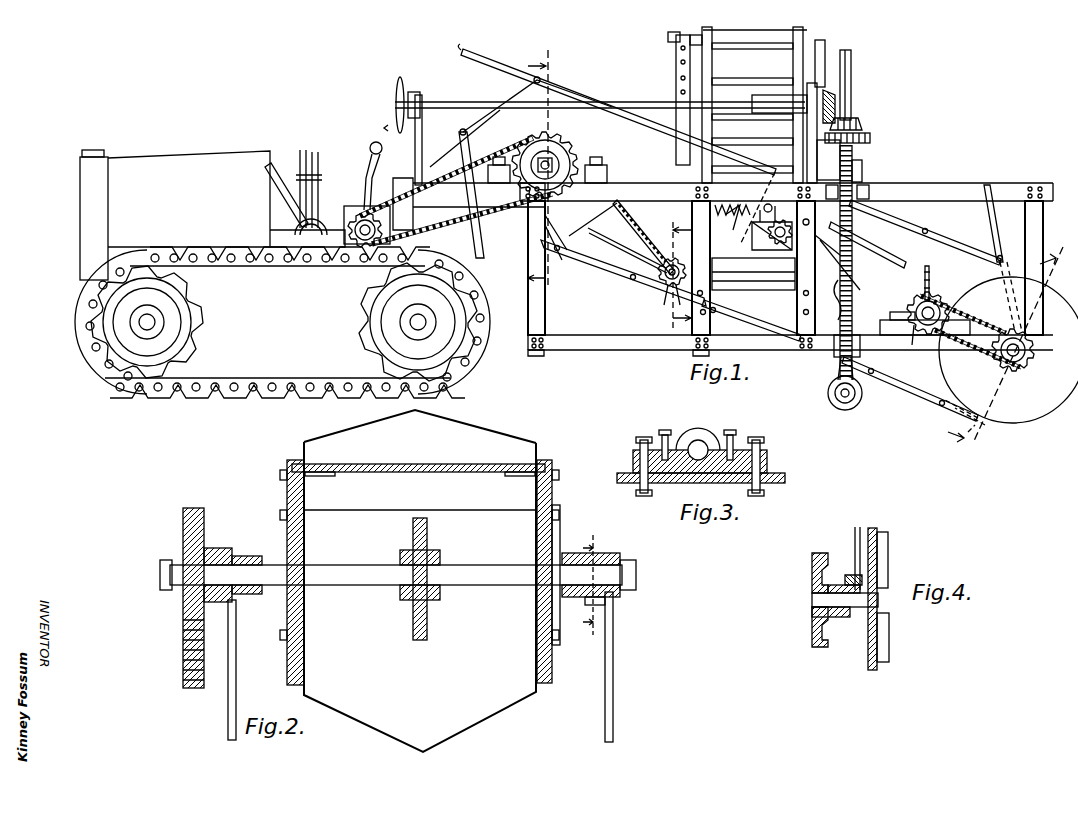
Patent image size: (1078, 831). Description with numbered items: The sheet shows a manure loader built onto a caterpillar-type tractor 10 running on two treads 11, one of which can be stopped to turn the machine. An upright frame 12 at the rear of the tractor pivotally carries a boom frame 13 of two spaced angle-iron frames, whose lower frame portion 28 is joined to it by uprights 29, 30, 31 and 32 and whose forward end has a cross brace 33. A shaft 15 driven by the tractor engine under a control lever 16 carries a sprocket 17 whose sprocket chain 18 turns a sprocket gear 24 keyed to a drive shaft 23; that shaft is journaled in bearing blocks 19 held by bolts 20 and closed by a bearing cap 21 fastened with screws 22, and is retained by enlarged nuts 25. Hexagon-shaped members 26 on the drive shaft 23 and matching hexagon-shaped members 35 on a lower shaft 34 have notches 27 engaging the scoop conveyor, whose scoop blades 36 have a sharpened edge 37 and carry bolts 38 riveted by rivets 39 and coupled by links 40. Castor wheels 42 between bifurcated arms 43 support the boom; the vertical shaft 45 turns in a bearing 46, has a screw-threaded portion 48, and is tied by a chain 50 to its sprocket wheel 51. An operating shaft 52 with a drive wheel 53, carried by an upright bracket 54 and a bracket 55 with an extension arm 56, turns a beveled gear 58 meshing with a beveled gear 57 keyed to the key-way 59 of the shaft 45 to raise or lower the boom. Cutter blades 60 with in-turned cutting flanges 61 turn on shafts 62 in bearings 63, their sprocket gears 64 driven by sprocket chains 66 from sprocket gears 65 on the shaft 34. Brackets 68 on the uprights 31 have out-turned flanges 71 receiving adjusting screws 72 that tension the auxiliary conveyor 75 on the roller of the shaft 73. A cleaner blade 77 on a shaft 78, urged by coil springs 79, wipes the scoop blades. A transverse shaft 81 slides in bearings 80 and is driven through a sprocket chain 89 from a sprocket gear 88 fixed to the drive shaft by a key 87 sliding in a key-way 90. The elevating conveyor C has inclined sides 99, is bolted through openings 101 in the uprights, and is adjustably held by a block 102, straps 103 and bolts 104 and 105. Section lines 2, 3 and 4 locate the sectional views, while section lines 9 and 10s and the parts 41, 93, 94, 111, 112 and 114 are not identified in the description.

In FIG. 1, the tractor 10 is at (212, 215).
In FIG. 1, the caterpillar tread 11 is at (258, 268).
In FIG. 1, the upright frame 12 is at (414, 214).
In FIG. 1, the boom frame 13 is at (786, 192).
In FIG. 2, the boom frame 13 is at (614, 598).
In FIG. 1, the shaft 15 is at (343, 235).
In FIG. 1, the control lever 16 is at (368, 152).
In FIG. 1, the sprocket 17 is at (366, 252).
In FIG. 1, the sprocket chain 18 is at (492, 160).
In FIG. 2, the sprocket chain 18 is at (193, 683).
In FIG. 1, the bearing block 19 is at (490, 180).
In FIG. 2, the bearing block 19 is at (242, 580).
In FIG. 3, the bearing block 19 is at (620, 468).
In FIG. 1, the bolt 20 is at (602, 165).
In FIG. 2, the bolt 20 is at (585, 606).
In FIG. 3, the bolt 20 is at (766, 442).
In FIG. 2, the bearing cap 21 is at (608, 556).
In FIG. 3, the bearing cap 21 is at (712, 428).
In FIG. 3, the screw 22 is at (735, 433).
In FIG. 1, the drive shaft 23 is at (553, 163).
In FIG. 2, the drive shaft 23 is at (396, 575).
In FIG. 1, the sprocket gear 24 is at (548, 150).
In FIG. 2, the sprocket gear 24 is at (198, 555).
In FIG. 2, the enlarged nut 25 is at (630, 560).
In FIG. 1, the hexagon-shaped member 26 is at (576, 262).
In FIG. 2, the hexagon-shaped member 26 is at (306, 620).
In FIG. 1, the notch 27 is at (855, 285).
In FIG. 1, the lower frame portion 28 is at (790, 345).
In FIG. 4, the lower frame portion 28 is at (845, 572).
In FIG. 1, the upright 29 is at (545, 317).
In FIG. 2, the upright 29 is at (236, 665).
In FIG. 1, the upright 30 is at (690, 335).
In FIG. 1, the upright 31 is at (803, 354).
In FIG. 1, the upright 32 is at (1043, 224).
In FIG. 4, the upright 32 is at (853, 534).
In FIG. 1, the cross brace 33 is at (1032, 182).
In FIG. 1, the shaft 34 is at (906, 333).
In FIG. 1, the hexagon-shaped member 35 is at (925, 300).
In FIG. 1, the scoop blade 36 is at (508, 65).
In FIG. 2, the scoop blade 36 is at (420, 581).
In FIG. 1, the pointed sharpened edge 37 is at (533, 98).
In FIG. 2, the pointed sharpened edge 37 is at (418, 420).
In FIG. 1, the bolt 38 is at (541, 80).
In FIG. 2, the bolt 38 is at (504, 478).
In FIG. 2, the rivet 39 is at (320, 477).
In FIG. 1, the link 40 is at (942, 233).
In FIG. 2, the link 40 is at (568, 532).
In FIG. 1, the screw bracket 41 is at (870, 186).
In FIG. 1, the castor wheel 42 is at (860, 403).
In FIG. 1, the bifurcated arm 43 is at (860, 388).
In FIG. 1, the vertical shaft 45 is at (838, 368).
In FIG. 1, the bearing 46 is at (850, 292).
In FIG. 1, the screw-threaded portion 48 is at (853, 156).
In FIG. 1, the chain 50 is at (872, 136).
In FIG. 1, the sprocket wheel 51 is at (828, 160).
In FIG. 1, the operating shaft 52 is at (477, 97).
In FIG. 1, the drive wheel 53 is at (404, 92).
In FIG. 1, the upright bracket 54 is at (422, 132).
In FIG. 1, the bracket 55 is at (866, 162).
In FIG. 1, the extension arm 56 is at (866, 128).
In FIG. 1, the beveled gear 57 is at (862, 120).
In FIG. 1, the beveled gear 58 is at (838, 92).
In FIG. 1, the key-way 59 is at (853, 65).
In FIG. 1, the cutter blade 60 is at (1008, 350).
In FIG. 4, the cutter blade 60 is at (872, 672).
In FIG. 4, the in-turned cutting flange 61 is at (889, 630).
In FIG. 4, the shaft 62 is at (860, 612).
In FIG. 4, the bearing 63 is at (838, 620).
In FIG. 1, the sprocket gear 64 is at (1035, 365).
In FIG. 4, the sprocket gear 64 is at (812, 578).
In FIG. 1, the sprocket gear 65 is at (940, 300).
In FIG. 1, the sprocket chain 66 is at (968, 318).
In FIG. 1, the bracket 68 is at (752, 250).
In FIG. 1, the out-turned flange 71 is at (810, 222).
In FIG. 1, the adjusting screw 72 is at (827, 252).
In FIG. 1, the shaft 73 is at (786, 230).
In FIG. 1, the auxiliary conveyor 75 is at (858, 242).
In FIG. 1, the cleaner blade 77 is at (735, 208).
In FIG. 1, the shaft 78 is at (768, 205).
In FIG. 1, the coil spring 79 is at (732, 218).
In FIG. 1, the bearing 80 is at (678, 258).
In FIG. 1, the transverse shaft 81 is at (650, 288).
In FIG. 2, the key 87 is at (422, 580).
In FIG. 2, the sprocket gear 88 is at (430, 534).
In FIG. 1, the sprocket chain 89 is at (608, 222).
In FIG. 2, the sprocket chain 89 is at (426, 640).
In FIG. 2, the key-way 90 is at (395, 572).
In FIG. 1, the gear bracket 93 is at (670, 307).
In FIG. 1, the adjusting screw 94 is at (930, 300).
In FIG. 1, the inclined side 99 is at (712, 40).
In FIG. 1, the opening 101 is at (713, 294).
In FIG. 1, the block 102 is at (668, 38).
In FIG. 1, the strap 103 is at (853, 44).
In FIG. 1, the bolt 104 is at (688, 52).
In FIG. 1, the bolt 105 is at (675, 92).
In FIG. 1, the elevator cross bars 111 is at (752, 108).
In FIG. 1, the shaft bearing 112 is at (764, 88).
In FIG. 1, the rear strut 114 is at (942, 258).
In FIG. 1, the elevating conveyor C is at (675, 72).
In FIG. 1, the section line 2— 2 is at (543, 170).
In FIG. 2, the section line 3— 3 is at (585, 579).
In FIG. 1, the section line 4— 4 is at (954, 350).
In FIG. 1, the section line 9- 9 is at (762, 198).
In FIG. 1, the section line 10-10 10s is at (669, 272).